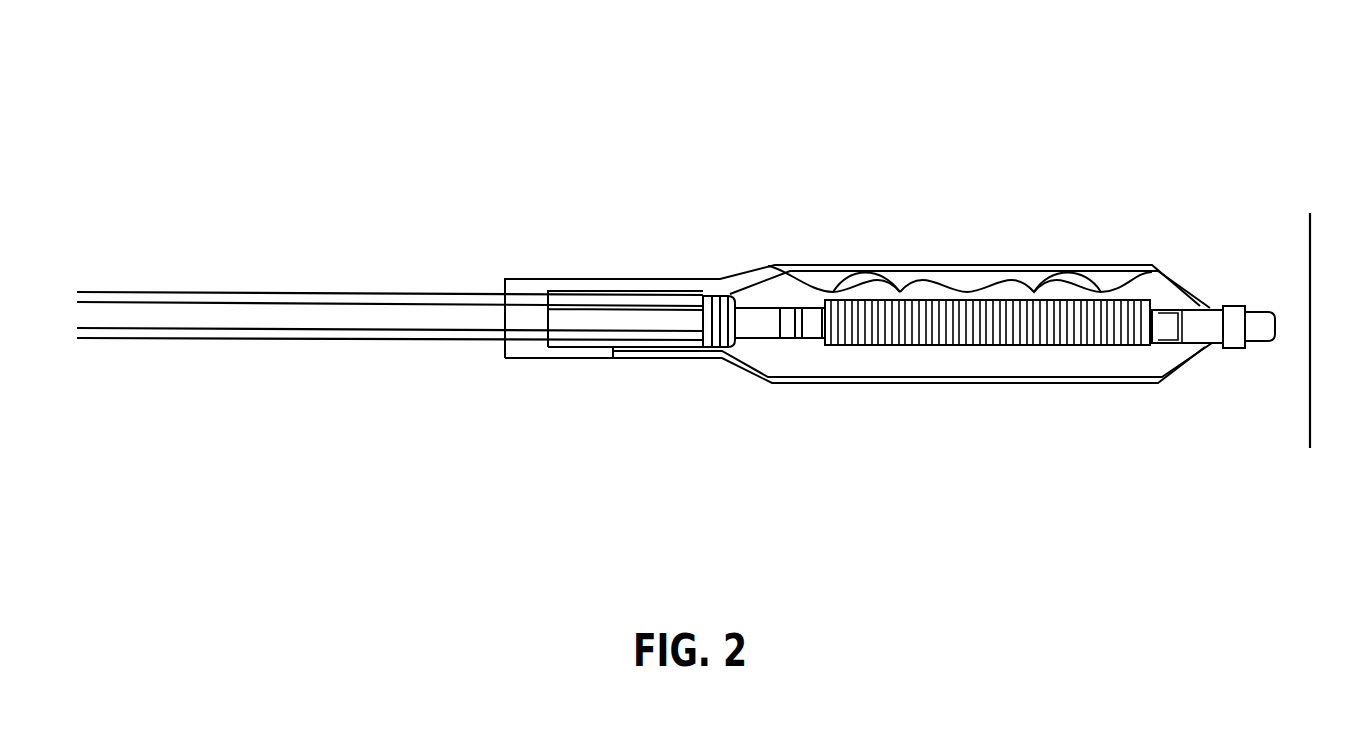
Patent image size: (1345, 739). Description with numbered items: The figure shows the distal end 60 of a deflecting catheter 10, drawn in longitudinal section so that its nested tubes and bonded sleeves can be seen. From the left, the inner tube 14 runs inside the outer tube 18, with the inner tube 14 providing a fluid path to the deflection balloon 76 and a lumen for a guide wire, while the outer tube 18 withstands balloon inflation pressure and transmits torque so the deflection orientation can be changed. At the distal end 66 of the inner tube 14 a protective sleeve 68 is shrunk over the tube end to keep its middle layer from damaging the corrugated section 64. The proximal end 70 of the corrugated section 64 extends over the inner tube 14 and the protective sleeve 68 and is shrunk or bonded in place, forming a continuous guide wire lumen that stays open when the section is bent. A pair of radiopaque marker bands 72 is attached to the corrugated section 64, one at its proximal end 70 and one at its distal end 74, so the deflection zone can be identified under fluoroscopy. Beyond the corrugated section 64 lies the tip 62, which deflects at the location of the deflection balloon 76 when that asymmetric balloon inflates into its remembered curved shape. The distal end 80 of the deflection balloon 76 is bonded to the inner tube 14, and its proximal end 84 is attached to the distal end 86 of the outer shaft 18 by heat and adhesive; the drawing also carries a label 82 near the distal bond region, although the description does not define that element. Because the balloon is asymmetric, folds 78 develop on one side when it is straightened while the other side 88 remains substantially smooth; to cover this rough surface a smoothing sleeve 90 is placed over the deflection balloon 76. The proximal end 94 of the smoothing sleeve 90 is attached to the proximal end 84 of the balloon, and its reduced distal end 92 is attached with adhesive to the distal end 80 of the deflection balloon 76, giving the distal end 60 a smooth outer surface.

The catheter 10 is at (597, 478).
The inner tube 14 is at (362, 302).
The outer tube 18 is at (255, 292).
The distal end 60 is at (1038, 170).
The tip 62 is at (1283, 307).
The corrugated section 64 is at (968, 273).
The distal end of inner tube 66 is at (715, 275).
The protective sleeve 68 is at (790, 338).
The proximal end of corrugated section 70 is at (820, 345).
The radiopaque marker bands 72 is at (810, 338).
The distal end of corrugated section 74 is at (1170, 270).
The deflection balloon 76 is at (870, 270).
The folds 78 is at (1068, 273).
The distal end of deflection balloon 80 is at (1215, 347).
The tip bond 82 is at (1200, 353).
The proximal end of deflection balloon 84 is at (615, 360).
The distal end of outer shaft 86 is at (680, 347).
The other side of balloon 88 is at (740, 367).
The smoothing sleeve 90 is at (586, 279).
The distal end of smoothing sleeve 92 is at (1235, 310).
The proximal end of smoothing sleeve 94 is at (543, 360).